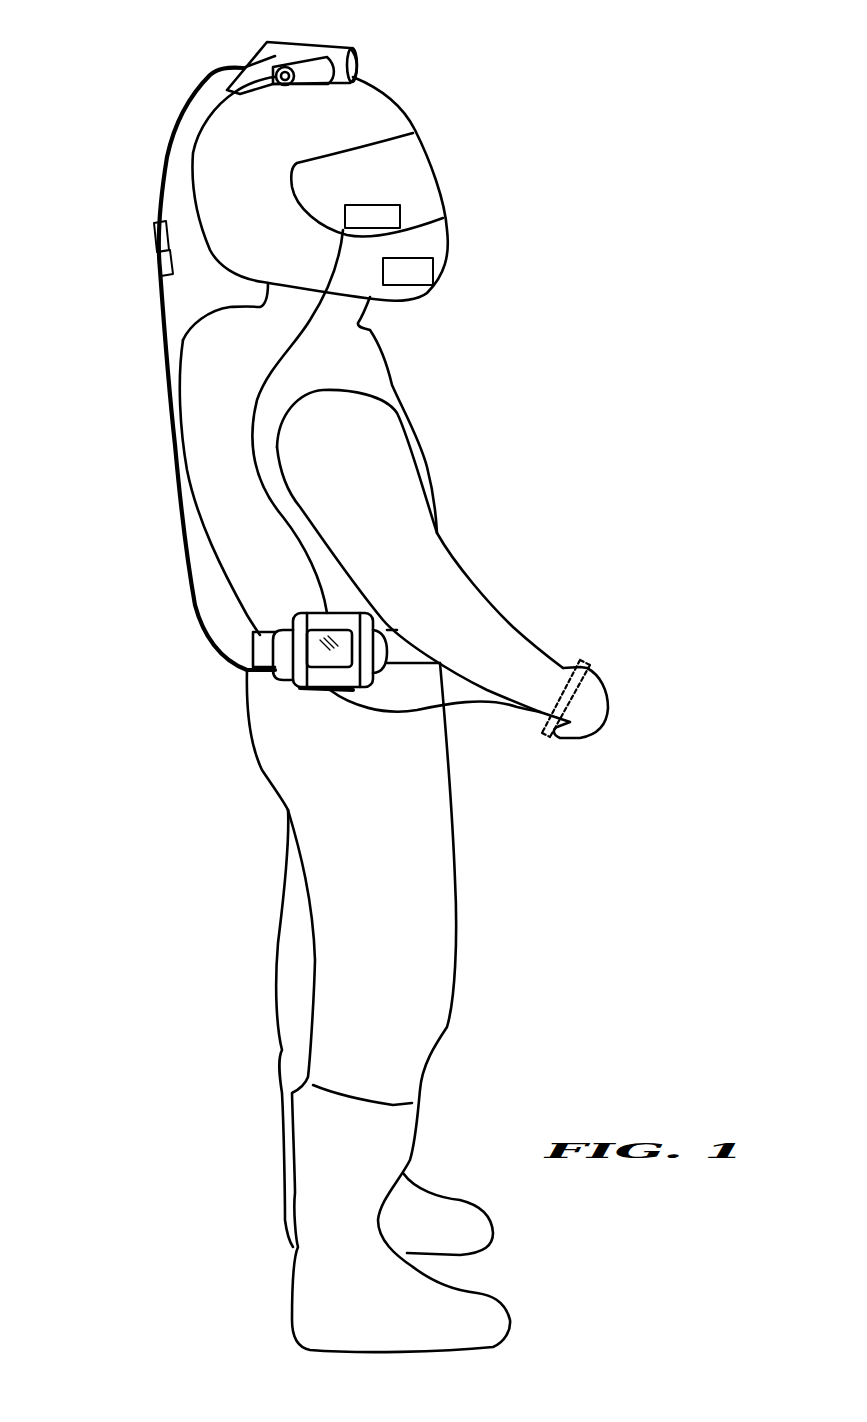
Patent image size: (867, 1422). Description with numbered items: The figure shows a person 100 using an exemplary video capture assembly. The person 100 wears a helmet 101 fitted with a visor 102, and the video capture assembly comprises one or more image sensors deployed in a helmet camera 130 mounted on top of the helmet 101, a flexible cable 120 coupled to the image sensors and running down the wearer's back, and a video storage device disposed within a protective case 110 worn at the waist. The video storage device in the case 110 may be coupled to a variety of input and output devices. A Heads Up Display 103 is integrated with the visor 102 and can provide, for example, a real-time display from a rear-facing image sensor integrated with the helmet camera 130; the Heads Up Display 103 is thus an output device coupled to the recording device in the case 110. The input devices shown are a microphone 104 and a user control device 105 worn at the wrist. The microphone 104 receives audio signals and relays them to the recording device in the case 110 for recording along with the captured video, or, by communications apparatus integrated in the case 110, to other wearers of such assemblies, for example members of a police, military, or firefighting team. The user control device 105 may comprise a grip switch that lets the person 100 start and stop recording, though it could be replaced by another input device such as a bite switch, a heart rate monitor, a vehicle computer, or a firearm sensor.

The person 100 is at (497, 275).
The helmet 101 is at (373, 110).
The visor 102 is at (410, 160).
The Heads Up Display (HUD) 103 is at (372, 216).
The microphone 104 is at (333, 275).
The user control device 105 is at (583, 667).
The protective case 110 is at (277, 673).
The flexible cable 120 is at (160, 197).
The helmet camera 130 is at (323, 43).